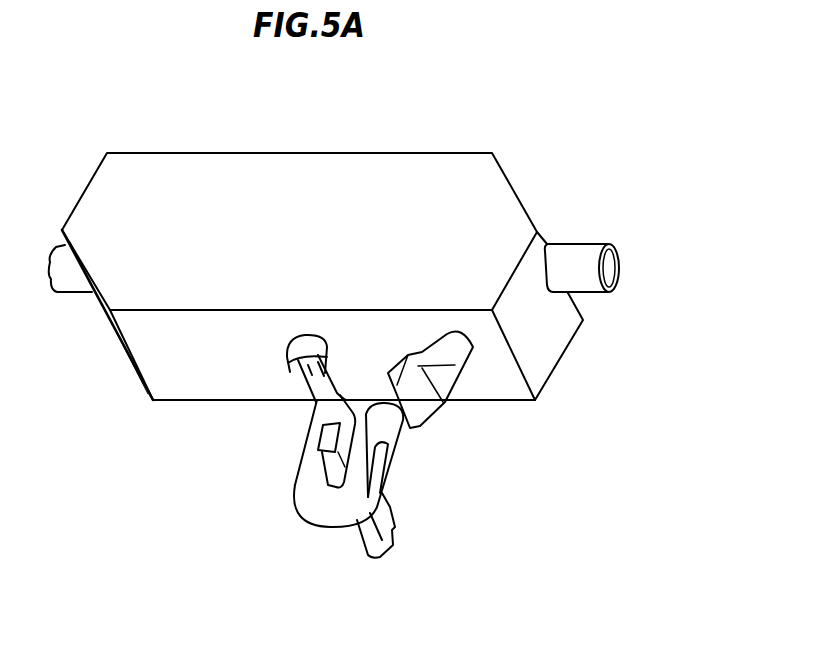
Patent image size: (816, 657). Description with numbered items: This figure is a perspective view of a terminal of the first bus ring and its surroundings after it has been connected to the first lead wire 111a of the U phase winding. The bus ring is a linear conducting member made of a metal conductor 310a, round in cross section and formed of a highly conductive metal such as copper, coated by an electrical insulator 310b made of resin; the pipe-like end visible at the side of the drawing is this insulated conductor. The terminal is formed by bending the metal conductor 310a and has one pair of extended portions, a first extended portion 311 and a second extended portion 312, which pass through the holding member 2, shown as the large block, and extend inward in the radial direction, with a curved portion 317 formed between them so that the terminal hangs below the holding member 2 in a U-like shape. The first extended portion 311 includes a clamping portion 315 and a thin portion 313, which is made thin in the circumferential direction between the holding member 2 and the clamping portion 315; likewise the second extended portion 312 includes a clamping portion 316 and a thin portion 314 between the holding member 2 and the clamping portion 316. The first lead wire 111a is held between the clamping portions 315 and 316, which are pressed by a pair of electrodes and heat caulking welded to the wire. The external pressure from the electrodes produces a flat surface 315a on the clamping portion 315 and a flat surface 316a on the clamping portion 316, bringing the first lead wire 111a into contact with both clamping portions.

The holding member 2 is at (314, 170).
The metal conductor 310a is at (610, 267).
The electrical insulator 310b is at (575, 258).
The first extended portion 311 is at (248, 411).
The second extended portion 312 is at (456, 414).
The thin portion 313 is at (300, 380).
The thin portion 314 is at (425, 403).
The clamping portion 315 is at (310, 455).
The flat surface 315a is at (297, 478).
The clamping portion 316 is at (370, 455).
The flat surface 316a is at (378, 477).
The curved portion 317 is at (327, 515).
The first lead wire 111a is at (337, 425).